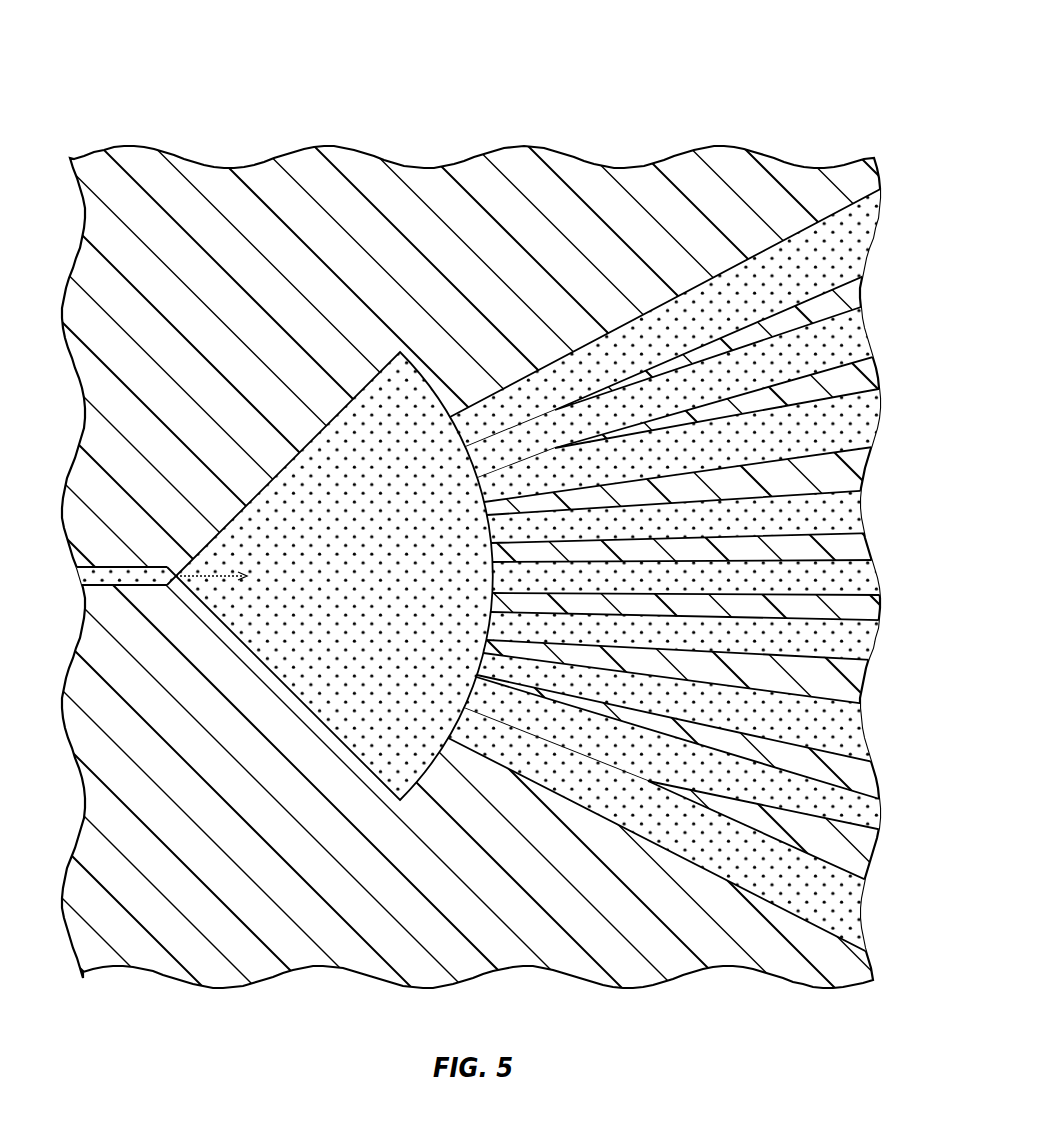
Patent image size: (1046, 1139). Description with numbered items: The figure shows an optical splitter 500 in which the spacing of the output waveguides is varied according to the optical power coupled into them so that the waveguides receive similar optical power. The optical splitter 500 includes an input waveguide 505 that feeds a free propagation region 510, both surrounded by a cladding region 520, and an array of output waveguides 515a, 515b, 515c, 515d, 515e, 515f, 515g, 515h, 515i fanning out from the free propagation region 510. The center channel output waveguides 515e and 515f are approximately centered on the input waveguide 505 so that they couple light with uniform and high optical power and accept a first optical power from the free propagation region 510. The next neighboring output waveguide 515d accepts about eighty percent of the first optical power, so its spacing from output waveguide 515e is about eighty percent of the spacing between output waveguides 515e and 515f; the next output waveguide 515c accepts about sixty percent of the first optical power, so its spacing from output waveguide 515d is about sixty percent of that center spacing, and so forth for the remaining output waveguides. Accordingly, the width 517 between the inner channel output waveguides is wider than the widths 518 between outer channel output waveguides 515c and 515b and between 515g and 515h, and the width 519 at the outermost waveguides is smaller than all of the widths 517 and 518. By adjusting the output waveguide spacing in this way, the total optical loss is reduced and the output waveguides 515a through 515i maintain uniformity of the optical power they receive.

The optical splitter 500 is at (523, 518).
The input waveguide 505 is at (103, 565).
The free propagation region 510 is at (400, 350).
The output waveguide 515a is at (878, 238).
The output waveguide 515b is at (860, 331).
The output waveguide 515c is at (878, 420).
The output waveguide 515d is at (858, 510).
The center channel output waveguide 515e is at (870, 578).
The center channel output waveguide 515f is at (874, 640).
The output waveguide 515g is at (850, 730).
The output waveguide 515h is at (880, 824).
The output waveguide 515i is at (854, 908).
The width 517 is at (538, 560).
The width 518 is at (549, 457).
The width 519 is at (640, 377).
The cladding region 520 is at (298, 166).